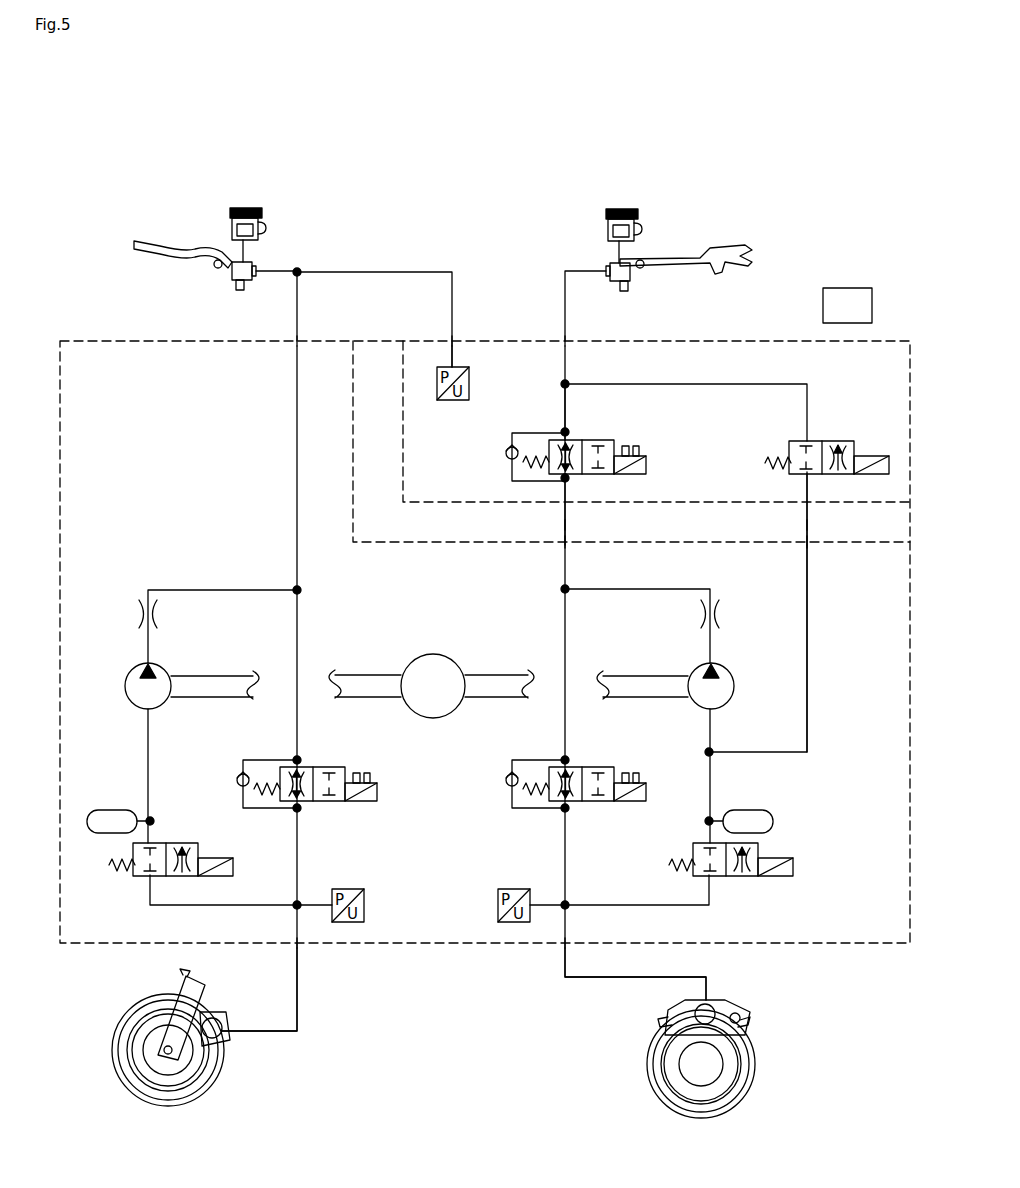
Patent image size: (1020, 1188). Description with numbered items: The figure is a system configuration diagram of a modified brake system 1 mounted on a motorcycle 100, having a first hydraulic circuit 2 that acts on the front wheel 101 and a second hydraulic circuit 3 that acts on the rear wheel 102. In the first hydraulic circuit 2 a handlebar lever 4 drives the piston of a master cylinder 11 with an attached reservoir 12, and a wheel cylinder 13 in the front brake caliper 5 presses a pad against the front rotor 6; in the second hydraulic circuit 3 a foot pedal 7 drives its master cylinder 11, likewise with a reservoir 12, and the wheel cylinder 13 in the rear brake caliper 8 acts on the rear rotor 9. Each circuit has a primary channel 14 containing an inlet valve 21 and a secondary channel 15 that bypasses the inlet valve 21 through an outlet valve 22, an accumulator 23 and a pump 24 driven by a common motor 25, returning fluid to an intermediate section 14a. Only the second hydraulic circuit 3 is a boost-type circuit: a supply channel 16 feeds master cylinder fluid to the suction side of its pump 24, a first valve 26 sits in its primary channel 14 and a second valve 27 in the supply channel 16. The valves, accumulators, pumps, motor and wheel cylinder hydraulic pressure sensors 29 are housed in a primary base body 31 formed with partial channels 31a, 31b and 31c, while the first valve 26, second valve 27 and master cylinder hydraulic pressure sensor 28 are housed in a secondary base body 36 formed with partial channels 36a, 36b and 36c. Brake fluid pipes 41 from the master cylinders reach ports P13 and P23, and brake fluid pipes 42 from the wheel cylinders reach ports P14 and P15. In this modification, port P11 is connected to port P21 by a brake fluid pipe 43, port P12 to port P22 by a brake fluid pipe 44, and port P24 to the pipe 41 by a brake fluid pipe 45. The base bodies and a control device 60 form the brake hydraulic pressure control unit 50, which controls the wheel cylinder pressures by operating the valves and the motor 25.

The brake system 1 is at (835, 168).
The first hydraulic circuit 2 is at (370, 195).
The second hydraulic circuit 3 is at (563, 195).
The handlebar lever 4 is at (157, 243).
The front brake caliper 5 is at (215, 1018).
The front rotor 6 is at (140, 1078).
The foot pedal 7 is at (728, 250).
The rear brake caliper 8 is at (666, 1017).
The rear rotor 9 is at (738, 1082).
The master cylinder 11 is at (241, 281).
The reservoir 12 is at (248, 208).
The wheel cylinder 13 is at (222, 1025).
The primary channel 14 is at (315, 625).
The intermediate section 14a is at (293, 593).
The secondary channel 15 is at (162, 573).
The supply channel 16 is at (824, 690).
The inlet valve 21 is at (335, 803).
The outlet valve 22 is at (190, 842).
The accumulator 23 is at (110, 808).
The pump 24 is at (157, 708).
The motor 25 is at (445, 716).
The first valve 26 is at (640, 463).
The second valve 27 is at (838, 440).
The master cylinder hydraulic pressure sensor 28 is at (445, 401).
The wheel cylinder hydraulic pressure sensor 29 is at (365, 893).
The primary base body 31 is at (75, 340).
The partial channel 31a is at (300, 548).
The partial channel 31b is at (233, 590).
The partial channel 31c is at (810, 630).
The secondary base body 36 is at (415, 340).
The partial channel 36a is at (567, 420).
The partial channel 36b is at (810, 393).
The partial channel 36c is at (455, 360).
The brake fluid pipe 41 is at (298, 305).
The brake fluid pipe 42 is at (300, 970).
The brake fluid pipe 43 is at (567, 532).
The brake fluid pipe 44 is at (810, 532).
The brake fluid pipe 45 is at (375, 272).
The brake hydraulic pressure control unit 50 is at (113, 285).
The control device 60 is at (856, 282).
The motorcycle 100 is at (857, 87).
The front wheel 101 is at (218, 1073).
The rear wheel 102 is at (660, 1088).
The port P11 is at (567, 543).
The port P12 is at (810, 543).
The port P13 is at (300, 340).
The port P14 is at (300, 950).
The port P15 is at (563, 950).
The port P21 is at (567, 500).
The port P22 is at (810, 500).
The port P23 is at (568, 340).
The port P24 is at (455, 340).